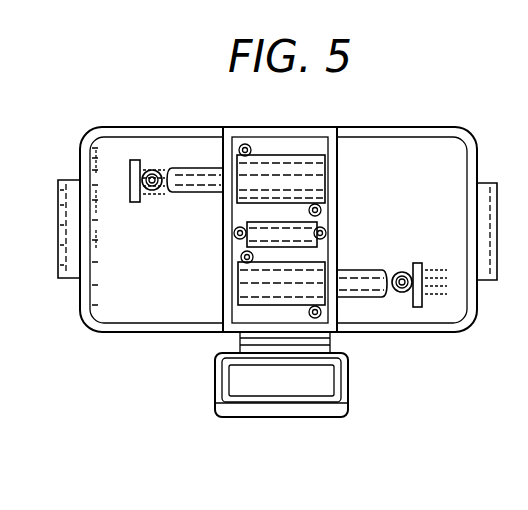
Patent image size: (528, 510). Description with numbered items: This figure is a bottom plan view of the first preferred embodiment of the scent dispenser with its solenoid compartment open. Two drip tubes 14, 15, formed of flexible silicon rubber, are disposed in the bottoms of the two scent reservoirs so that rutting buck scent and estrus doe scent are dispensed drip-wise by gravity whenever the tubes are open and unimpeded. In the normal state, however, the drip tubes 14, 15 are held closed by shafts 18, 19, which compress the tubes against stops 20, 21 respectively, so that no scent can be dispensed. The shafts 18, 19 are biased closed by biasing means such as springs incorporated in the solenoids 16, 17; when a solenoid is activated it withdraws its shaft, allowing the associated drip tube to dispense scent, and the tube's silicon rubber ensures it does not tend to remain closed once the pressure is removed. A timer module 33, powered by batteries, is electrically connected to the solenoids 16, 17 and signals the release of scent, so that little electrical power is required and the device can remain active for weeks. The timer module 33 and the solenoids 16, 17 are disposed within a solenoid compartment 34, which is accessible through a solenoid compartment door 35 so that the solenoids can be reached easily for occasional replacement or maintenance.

The drip tube 14 is at (156, 172).
The drip tube 15 is at (407, 292).
The solenoid 16 is at (303, 163).
The solenoid 17 is at (245, 308).
The shaft 18 is at (200, 170).
The shaft 19 is at (367, 298).
The stop 20 is at (130, 170).
The stop 21 is at (425, 302).
The timer module 33 is at (303, 232).
The solenoid compartment 34 is at (223, 263).
The solenoid compartment door 35 is at (345, 388).